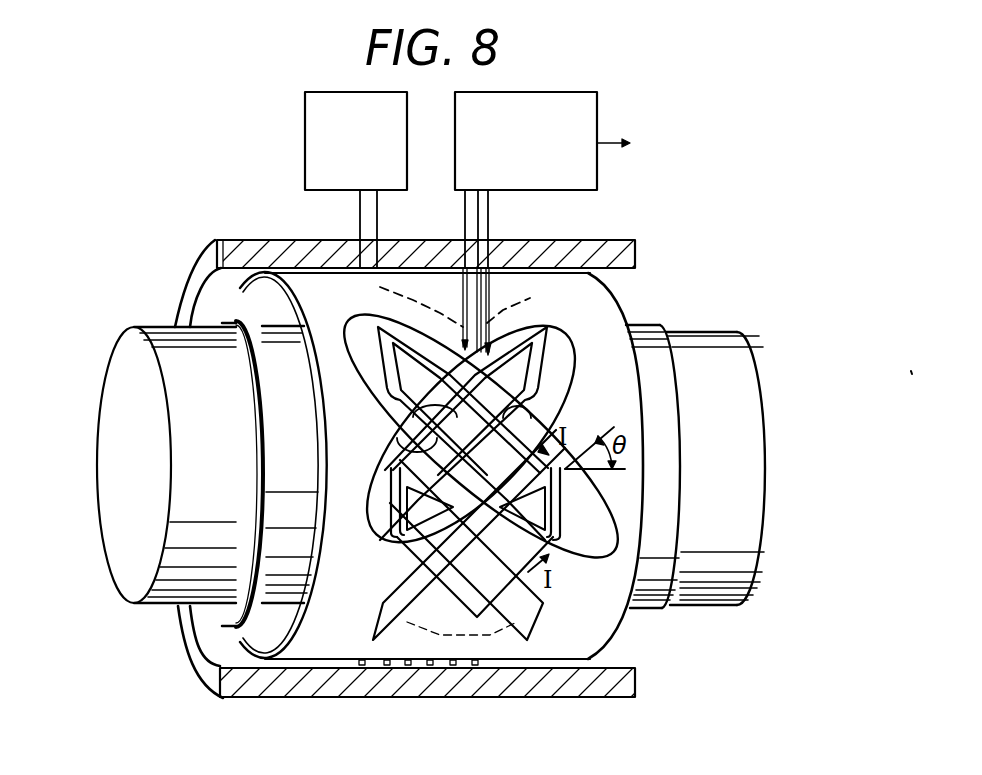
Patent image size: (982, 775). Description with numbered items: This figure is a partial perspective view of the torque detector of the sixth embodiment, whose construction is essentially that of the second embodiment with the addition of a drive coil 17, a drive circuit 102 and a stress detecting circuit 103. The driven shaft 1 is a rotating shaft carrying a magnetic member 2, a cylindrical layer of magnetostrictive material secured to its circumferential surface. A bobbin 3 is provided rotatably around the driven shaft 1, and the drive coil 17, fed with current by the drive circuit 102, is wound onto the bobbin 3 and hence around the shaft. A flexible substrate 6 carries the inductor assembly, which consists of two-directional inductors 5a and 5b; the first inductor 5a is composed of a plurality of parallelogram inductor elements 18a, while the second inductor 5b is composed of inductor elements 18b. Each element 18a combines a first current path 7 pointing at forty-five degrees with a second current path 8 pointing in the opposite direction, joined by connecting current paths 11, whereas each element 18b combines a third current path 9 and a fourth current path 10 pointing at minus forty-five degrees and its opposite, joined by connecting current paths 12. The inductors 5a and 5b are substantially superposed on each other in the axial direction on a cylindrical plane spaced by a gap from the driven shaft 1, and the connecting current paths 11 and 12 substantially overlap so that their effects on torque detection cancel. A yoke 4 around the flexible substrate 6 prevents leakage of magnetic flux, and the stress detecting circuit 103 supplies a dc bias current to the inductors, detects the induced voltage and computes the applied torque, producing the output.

The driven shaft 1 is at (696, 329).
The magnetic member 2 is at (645, 323).
The bobbin 3 is at (262, 302).
The yoke 4 is at (313, 257).
The first inductor 5a is at (399, 594).
The second inductor 5b is at (538, 596).
The flexible substrate 6 is at (265, 302).
The first current path 7 is at (504, 453).
The second current path 8 is at (405, 404).
The third current path 9 is at (548, 410).
The fourth current path 10 is at (412, 448).
The connecting current paths 11 is at (546, 383).
The connecting current paths 12 is at (401, 381).
The drive coil 17 is at (487, 666).
The inductor element 18a is at (570, 368).
The inductor element 18b is at (367, 360).
The drive circuit 102 is at (305, 135).
The stress detecting circuit 103 is at (597, 176).